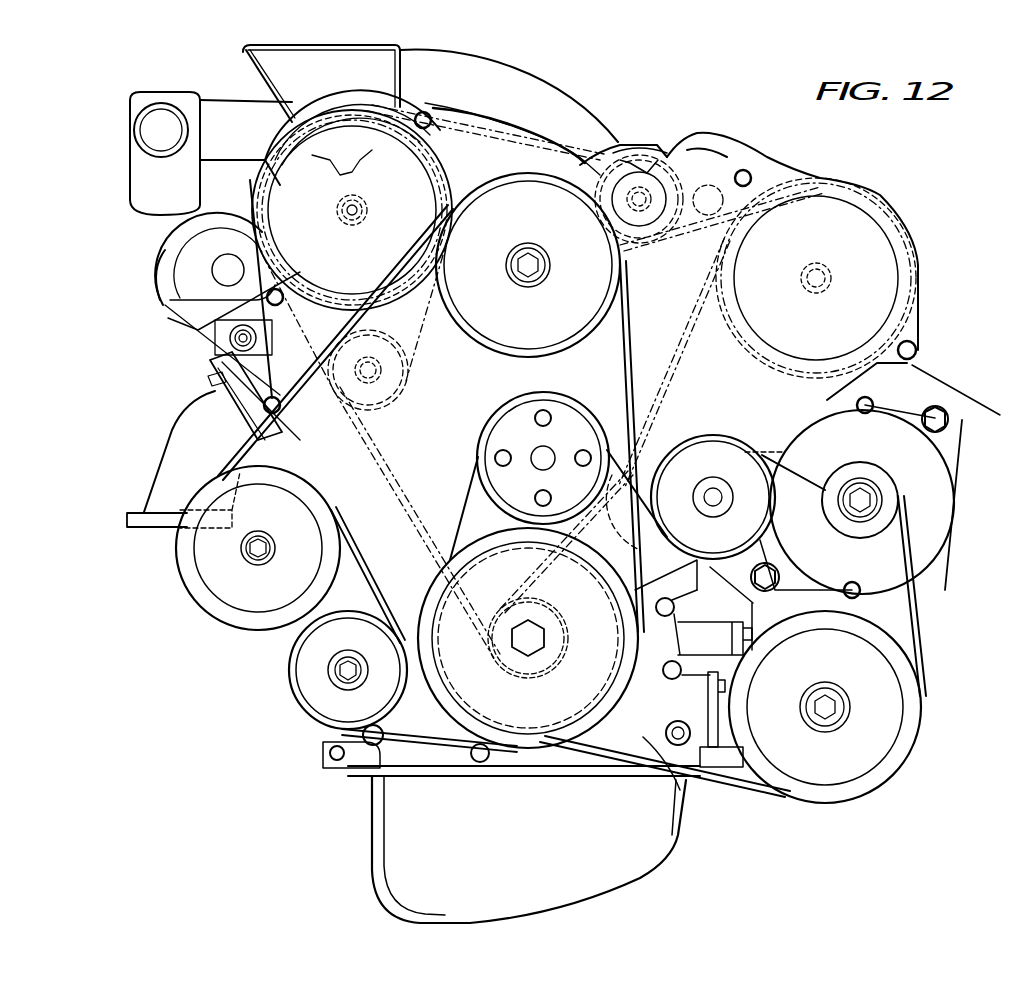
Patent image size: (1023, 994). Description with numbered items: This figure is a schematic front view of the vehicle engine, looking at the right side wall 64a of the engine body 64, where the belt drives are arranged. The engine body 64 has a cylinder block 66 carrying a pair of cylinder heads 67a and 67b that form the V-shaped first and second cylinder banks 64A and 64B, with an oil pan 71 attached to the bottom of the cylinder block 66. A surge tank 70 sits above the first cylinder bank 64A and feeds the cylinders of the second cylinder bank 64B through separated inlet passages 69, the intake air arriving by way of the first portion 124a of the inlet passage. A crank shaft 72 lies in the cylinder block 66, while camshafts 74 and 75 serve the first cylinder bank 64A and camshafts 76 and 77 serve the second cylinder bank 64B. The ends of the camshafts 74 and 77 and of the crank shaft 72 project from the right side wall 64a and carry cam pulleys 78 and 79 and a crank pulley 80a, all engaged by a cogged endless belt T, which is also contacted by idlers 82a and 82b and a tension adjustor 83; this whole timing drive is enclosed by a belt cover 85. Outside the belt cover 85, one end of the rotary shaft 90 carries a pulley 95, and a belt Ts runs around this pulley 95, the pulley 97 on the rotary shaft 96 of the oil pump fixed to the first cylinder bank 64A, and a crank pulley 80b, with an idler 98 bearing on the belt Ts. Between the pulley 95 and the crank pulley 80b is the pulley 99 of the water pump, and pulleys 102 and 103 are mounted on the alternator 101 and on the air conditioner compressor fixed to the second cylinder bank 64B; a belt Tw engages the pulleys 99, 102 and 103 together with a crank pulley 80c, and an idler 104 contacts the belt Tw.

The engine body 64 is at (272, 664).
The first cylinder bank 64A is at (246, 376).
The second cylinder bank 64B is at (935, 354).
The right side wall 64a is at (676, 802).
The cylinder block 66 is at (332, 573).
The cylinder head 67a is at (226, 338).
The cylinder head 67b is at (790, 450).
The separated inlet passages 69 is at (528, 90).
The surge tank 70 is at (246, 62).
The oil pan 71 is at (384, 860).
The crank shaft 72 is at (523, 682).
The camshaft 74 is at (348, 226).
The camshaft 75 is at (226, 270).
The camshaft 76 is at (710, 183).
The camshaft 77 is at (806, 298).
The cam pulley 78 is at (352, 181).
The cam pulley 79 is at (829, 273).
The crank pulley 80a is at (531, 667).
The crank pulley 80b is at (480, 692).
The crank pulley 80c is at (523, 700).
The idler 82a is at (637, 160).
The idler 82b is at (690, 462).
The tension adjustor 83 is at (336, 383).
The belt cover 85 is at (552, 158).
The rotary shaft 90 is at (528, 283).
The pulley 95 is at (566, 342).
The rotary shaft 96 is at (256, 554).
The pulley 97 is at (233, 553).
The idler 98 is at (312, 700).
The pulley 99 is at (494, 420).
The alternator 101 is at (946, 520).
The pulley 102 is at (886, 480).
The pulley 103 is at (916, 730).
The idler 104 is at (674, 465).
The first portion of inlet passage 124a is at (222, 101).
The cogged endless belt T is at (434, 468).
The belt Ts is at (628, 332).
The belt Tw is at (916, 633).